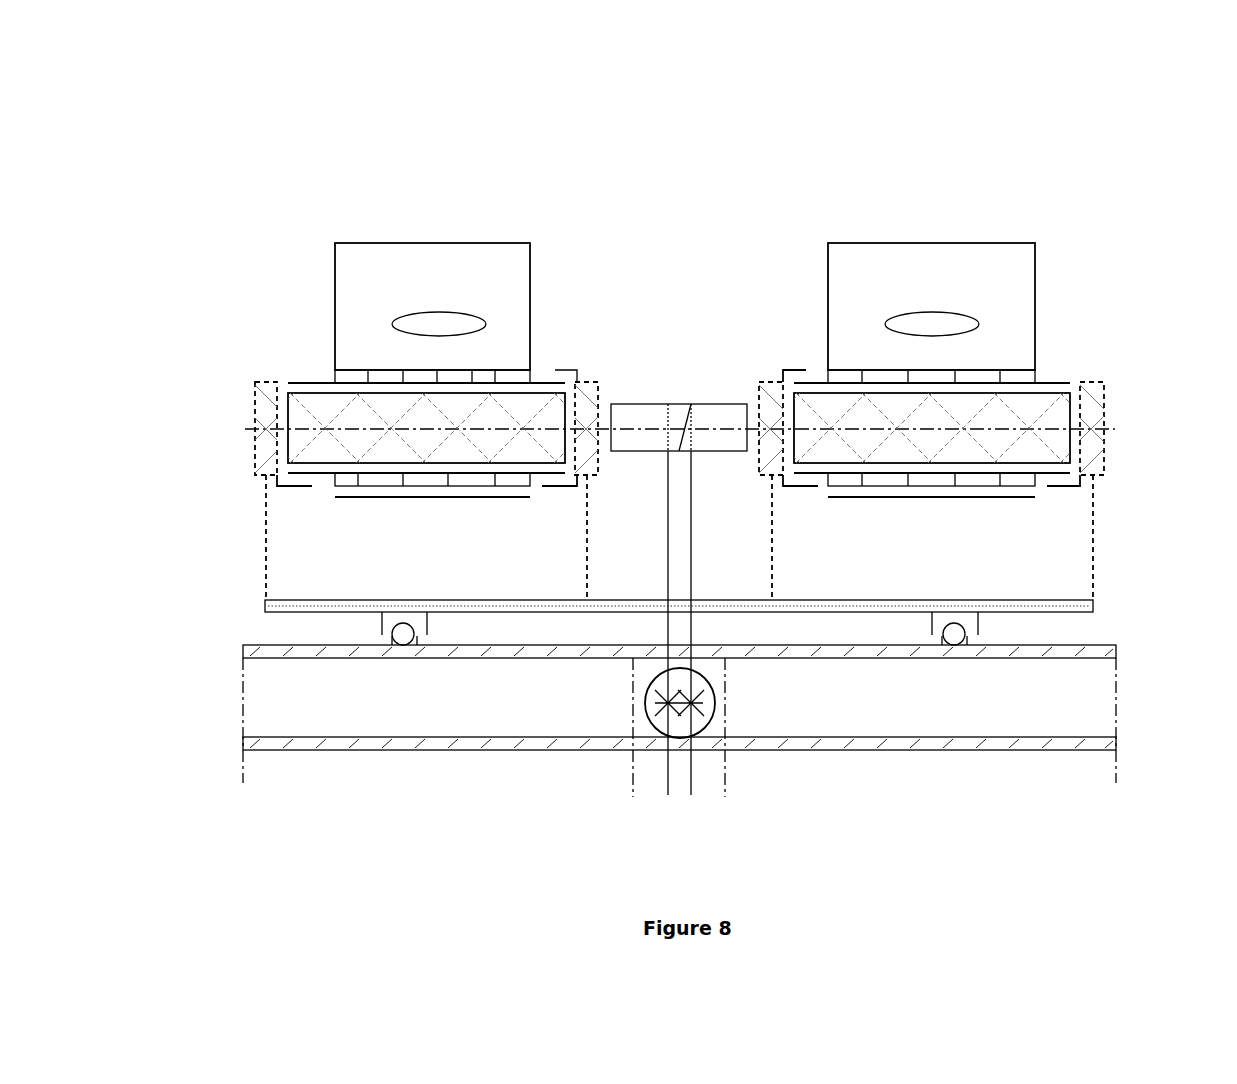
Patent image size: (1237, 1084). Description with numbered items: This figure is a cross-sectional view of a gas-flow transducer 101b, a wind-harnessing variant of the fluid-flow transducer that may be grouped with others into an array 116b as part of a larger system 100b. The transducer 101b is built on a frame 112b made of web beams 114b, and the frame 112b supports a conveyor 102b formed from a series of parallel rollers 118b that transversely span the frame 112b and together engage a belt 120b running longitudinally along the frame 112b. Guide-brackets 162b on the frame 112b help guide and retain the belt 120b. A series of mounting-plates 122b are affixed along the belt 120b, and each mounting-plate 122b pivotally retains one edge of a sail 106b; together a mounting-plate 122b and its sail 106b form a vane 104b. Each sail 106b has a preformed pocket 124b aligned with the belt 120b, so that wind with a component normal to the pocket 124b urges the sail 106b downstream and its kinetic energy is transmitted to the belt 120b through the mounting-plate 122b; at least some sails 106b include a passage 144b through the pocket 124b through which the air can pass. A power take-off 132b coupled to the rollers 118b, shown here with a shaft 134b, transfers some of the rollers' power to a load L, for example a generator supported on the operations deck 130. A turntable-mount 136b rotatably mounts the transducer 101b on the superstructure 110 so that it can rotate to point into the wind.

The linear motion system 100b is at (1114, 185).
The first motor module 116b is at (417, 160).
The vane 104b is at (894, 227).
The sail 106b is at (537, 237).
The preformed pocket 124b is at (345, 265).
The passage 144b is at (885, 315).
The gas-flow transducer 101b is at (272, 312).
The mounting-plate 122b is at (537, 365).
The belt 120b is at (1060, 374).
The roller 118b is at (1057, 448).
The guide-bracket 162b is at (788, 358).
The power take-off 132b is at (653, 387).
The shaft 134b is at (646, 553).
The conveyor 102b is at (246, 512).
The turntable-mount 136b is at (997, 623).
The superstructure 110 is at (1134, 662).
The frame 112b is at (232, 649).
The web beam 114b is at (1083, 667).
The operations deck 130 is at (1015, 765).
The load L is at (725, 698).